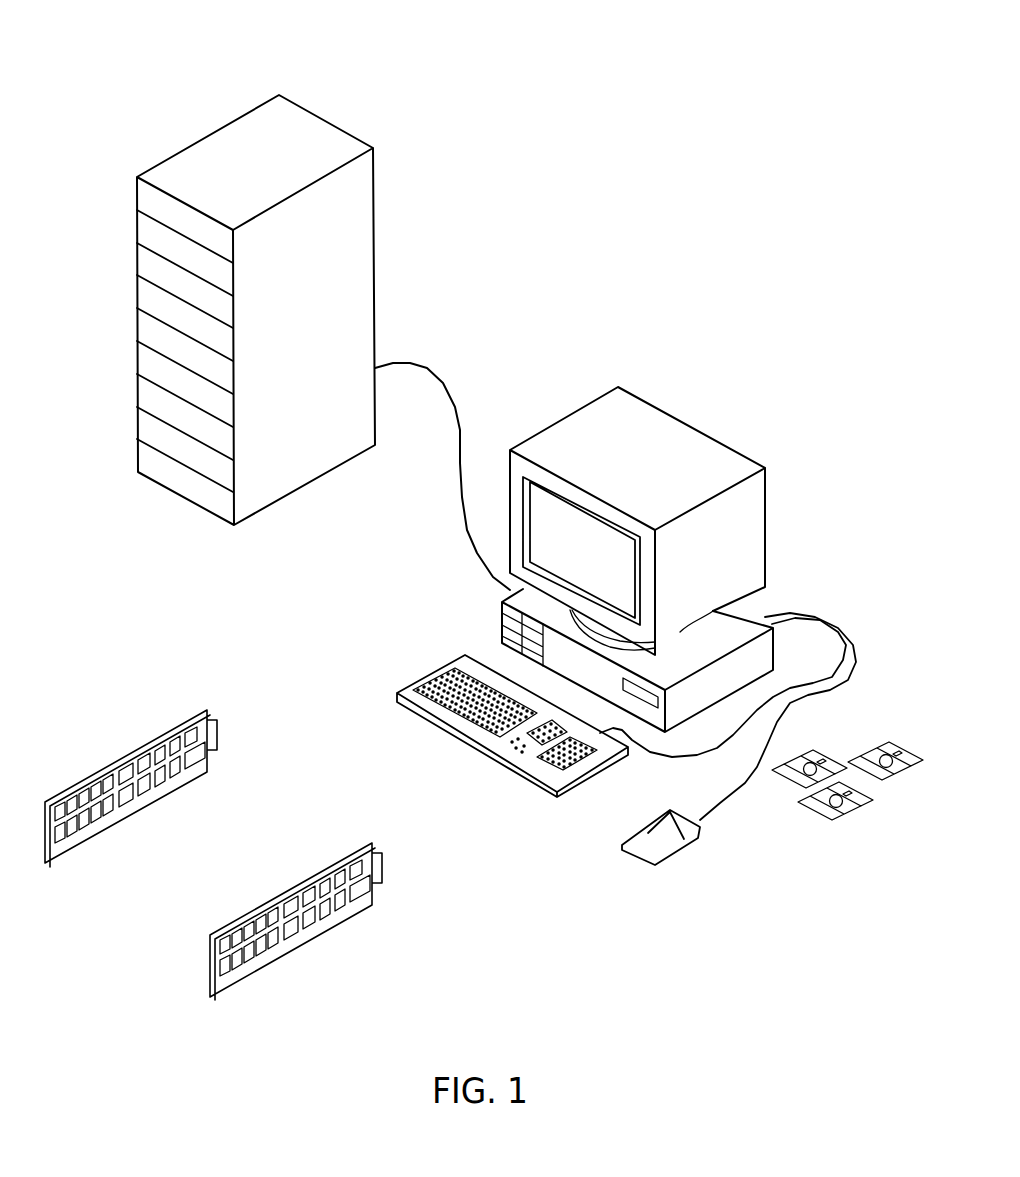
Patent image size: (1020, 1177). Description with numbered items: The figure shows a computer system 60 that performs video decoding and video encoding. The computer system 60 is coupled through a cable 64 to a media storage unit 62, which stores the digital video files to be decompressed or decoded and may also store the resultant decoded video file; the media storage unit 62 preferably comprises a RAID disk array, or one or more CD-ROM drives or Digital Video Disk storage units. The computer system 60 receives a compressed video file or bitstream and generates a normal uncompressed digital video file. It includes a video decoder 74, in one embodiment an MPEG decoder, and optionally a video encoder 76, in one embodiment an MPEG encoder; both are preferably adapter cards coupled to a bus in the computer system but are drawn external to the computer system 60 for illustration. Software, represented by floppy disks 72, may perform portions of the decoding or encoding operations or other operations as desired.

The computer system 60 is at (610, 410).
The media storage unit 62 is at (282, 126).
The cable 64 is at (423, 372).
The floppy disks 72 is at (847, 808).
The video decoder 74 is at (175, 730).
The video encoder 76 is at (333, 868).